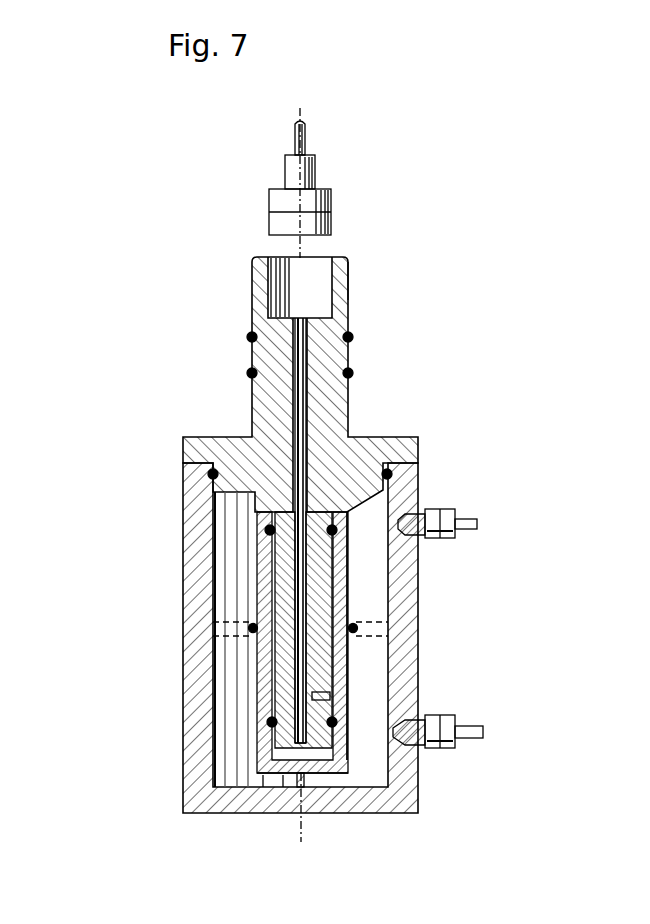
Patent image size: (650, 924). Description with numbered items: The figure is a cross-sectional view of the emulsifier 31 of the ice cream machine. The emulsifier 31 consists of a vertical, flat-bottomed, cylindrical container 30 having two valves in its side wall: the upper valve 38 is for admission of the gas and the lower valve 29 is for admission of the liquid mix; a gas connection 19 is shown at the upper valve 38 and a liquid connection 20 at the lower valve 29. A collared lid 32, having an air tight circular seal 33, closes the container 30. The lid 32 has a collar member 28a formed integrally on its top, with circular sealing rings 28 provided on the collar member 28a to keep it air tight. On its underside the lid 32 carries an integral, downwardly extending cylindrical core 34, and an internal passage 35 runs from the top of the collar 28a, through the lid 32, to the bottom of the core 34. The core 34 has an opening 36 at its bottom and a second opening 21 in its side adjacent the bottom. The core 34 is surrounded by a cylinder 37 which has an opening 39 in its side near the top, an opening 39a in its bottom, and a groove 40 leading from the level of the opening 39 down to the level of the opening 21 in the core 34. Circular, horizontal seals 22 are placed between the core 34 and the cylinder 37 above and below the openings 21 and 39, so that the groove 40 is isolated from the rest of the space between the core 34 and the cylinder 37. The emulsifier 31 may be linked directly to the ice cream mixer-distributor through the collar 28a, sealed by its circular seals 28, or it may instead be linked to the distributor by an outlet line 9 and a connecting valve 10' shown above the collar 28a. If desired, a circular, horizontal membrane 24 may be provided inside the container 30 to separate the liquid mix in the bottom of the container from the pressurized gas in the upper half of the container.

The outlet line 9 is at (297, 144).
The connecting valve 10' is at (247, 195).
The collar member 28a is at (351, 288).
The circular sealing rings 28 is at (247, 373).
The emulsifier 31 is at (248, 534).
The collared lid 32 is at (193, 446).
The circular seal 33 is at (208, 475).
The circular horizontal seals 22 is at (266, 530).
The cylinder 37 is at (262, 572).
The cylindrical core 34 is at (283, 602).
The internal passage 35 is at (307, 647).
The cylindrical container 30 is at (195, 706).
The inlet fitting 19 is at (445, 529).
The upper valve 38 is at (432, 540).
The outlet fitting 20 is at (443, 756).
The lower valve 29 is at (440, 750).
The side opening of cylinder 39 is at (345, 575).
The groove 40 is at (333, 612).
The circular horizontal membrane 24 is at (380, 630).
The second opening of core 21 is at (330, 696).
The bottom opening of core 36 is at (290, 797).
The bottom opening of cylinder 39a is at (305, 814).